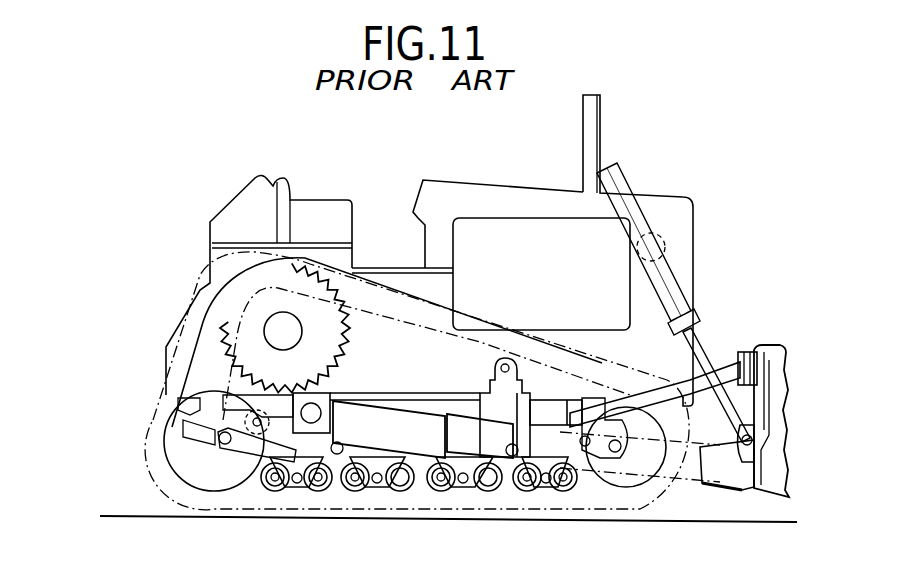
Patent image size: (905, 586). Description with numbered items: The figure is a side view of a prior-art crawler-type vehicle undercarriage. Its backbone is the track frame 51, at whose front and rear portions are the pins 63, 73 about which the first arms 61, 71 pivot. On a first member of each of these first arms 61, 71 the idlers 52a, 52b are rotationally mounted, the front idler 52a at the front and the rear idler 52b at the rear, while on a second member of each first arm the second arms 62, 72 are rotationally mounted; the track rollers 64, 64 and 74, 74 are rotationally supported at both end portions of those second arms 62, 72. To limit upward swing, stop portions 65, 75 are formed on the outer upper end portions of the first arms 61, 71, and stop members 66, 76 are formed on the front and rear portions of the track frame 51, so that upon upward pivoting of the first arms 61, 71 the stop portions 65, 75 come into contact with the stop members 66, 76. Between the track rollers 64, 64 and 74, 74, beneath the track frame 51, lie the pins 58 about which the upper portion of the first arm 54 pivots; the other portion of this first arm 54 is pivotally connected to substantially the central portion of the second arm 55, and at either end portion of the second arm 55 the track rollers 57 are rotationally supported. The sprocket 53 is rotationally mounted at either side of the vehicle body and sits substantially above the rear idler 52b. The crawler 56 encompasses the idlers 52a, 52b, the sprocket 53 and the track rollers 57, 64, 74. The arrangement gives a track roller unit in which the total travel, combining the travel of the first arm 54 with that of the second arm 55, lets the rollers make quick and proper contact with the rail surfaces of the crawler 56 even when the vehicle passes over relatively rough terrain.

The track frame 51 is at (423, 392).
The front idler 52a is at (648, 462).
The rear idler 52b is at (183, 462).
The sprocket 53 is at (250, 328).
The first arm 54 is at (423, 429).
The second arm 55 is at (400, 493).
The crawler 56 is at (405, 285).
The track roller 57 is at (350, 525).
The pin 58 is at (337, 440).
The first arm 61 is at (622, 455).
The second arm 62 is at (515, 462).
The pin 63 is at (590, 425).
The track roller 64 is at (547, 482).
The stop portion 65 is at (678, 424).
The stop member 66 is at (612, 407).
The first arm 71 is at (246, 462).
The second arm 72 is at (320, 490).
The pin 73 is at (247, 403).
The track roller 74 is at (273, 491).
The stop portion 75 is at (183, 435).
The stop member 76 is at (178, 398).